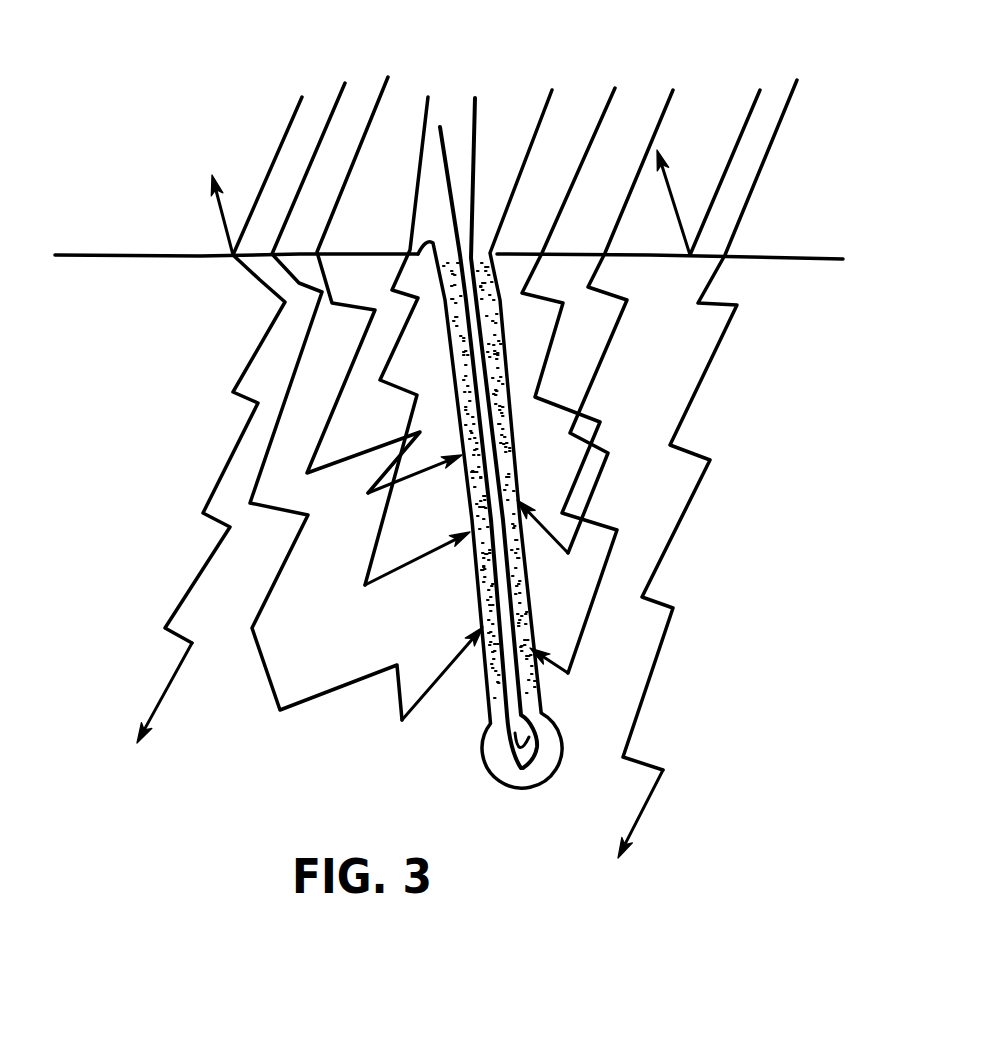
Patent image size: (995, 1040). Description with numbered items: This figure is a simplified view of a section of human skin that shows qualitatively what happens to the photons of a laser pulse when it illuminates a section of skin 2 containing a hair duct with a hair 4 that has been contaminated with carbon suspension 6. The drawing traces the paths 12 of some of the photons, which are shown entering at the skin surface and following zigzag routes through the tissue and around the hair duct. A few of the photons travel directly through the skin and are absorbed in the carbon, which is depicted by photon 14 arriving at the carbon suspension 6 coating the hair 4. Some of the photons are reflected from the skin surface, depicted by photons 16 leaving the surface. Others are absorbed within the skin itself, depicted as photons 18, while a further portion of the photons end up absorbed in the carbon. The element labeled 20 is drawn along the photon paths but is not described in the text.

The skin 2 is at (785, 335).
The hair 4 is at (448, 133).
The carbon suspension 6 is at (494, 237).
The paths 12 is at (774, 428).
The photon 14 is at (552, 90).
The photons 16 is at (290, 115).
The photons 18 is at (345, 83).
The current path 20 is at (427, 97).